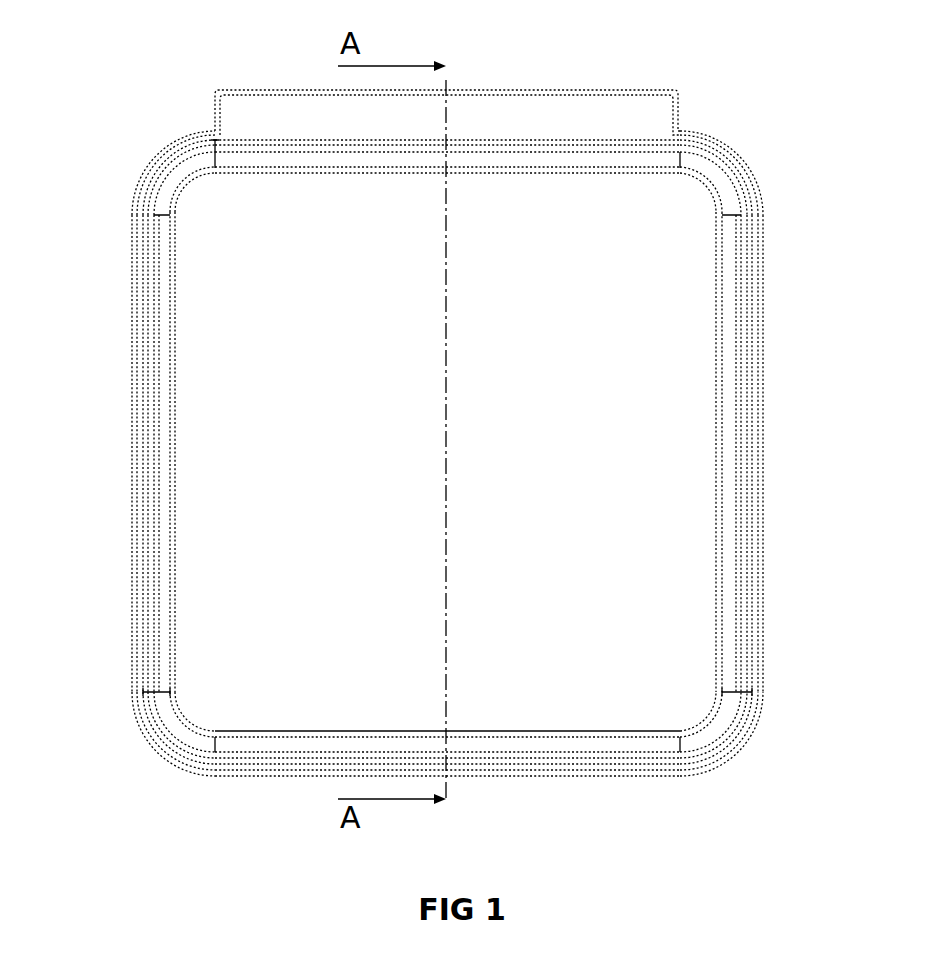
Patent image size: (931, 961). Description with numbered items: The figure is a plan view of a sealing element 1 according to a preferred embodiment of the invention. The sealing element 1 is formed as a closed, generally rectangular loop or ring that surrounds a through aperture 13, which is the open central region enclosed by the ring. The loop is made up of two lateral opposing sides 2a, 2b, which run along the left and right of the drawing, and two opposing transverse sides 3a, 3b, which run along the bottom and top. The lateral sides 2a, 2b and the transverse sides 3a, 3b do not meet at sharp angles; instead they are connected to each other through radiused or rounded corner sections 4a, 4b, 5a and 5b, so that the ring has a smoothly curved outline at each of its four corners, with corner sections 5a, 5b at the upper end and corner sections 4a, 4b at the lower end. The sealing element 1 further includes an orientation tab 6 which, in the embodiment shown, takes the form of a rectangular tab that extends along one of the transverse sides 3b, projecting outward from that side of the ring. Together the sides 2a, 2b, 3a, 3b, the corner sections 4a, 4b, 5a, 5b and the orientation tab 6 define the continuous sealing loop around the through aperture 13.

The sealing element 1 is at (740, 106).
The lateral side 2a is at (733, 455).
The lateral side 2b is at (160, 447).
The transverse side 3a is at (502, 745).
The transverse side 3b is at (607, 158).
The corner section 4a is at (171, 725).
The corner section 4b is at (713, 725).
The corner section 5a is at (172, 178).
The corner section 5b is at (727, 193).
The orientation tab 6 is at (557, 108).
The through aperture 13 is at (577, 693).